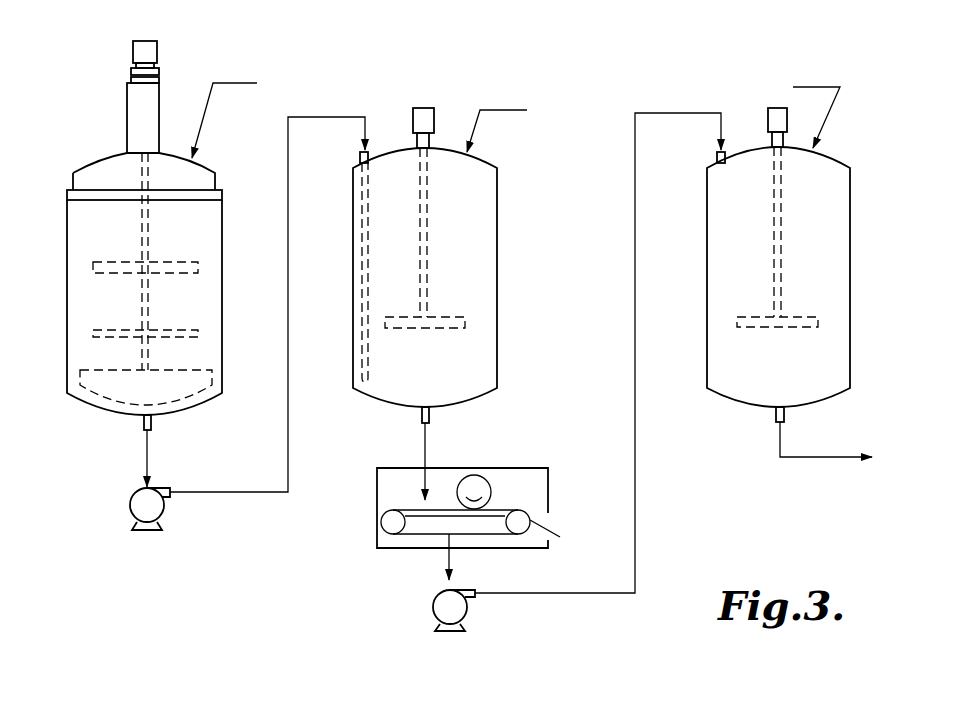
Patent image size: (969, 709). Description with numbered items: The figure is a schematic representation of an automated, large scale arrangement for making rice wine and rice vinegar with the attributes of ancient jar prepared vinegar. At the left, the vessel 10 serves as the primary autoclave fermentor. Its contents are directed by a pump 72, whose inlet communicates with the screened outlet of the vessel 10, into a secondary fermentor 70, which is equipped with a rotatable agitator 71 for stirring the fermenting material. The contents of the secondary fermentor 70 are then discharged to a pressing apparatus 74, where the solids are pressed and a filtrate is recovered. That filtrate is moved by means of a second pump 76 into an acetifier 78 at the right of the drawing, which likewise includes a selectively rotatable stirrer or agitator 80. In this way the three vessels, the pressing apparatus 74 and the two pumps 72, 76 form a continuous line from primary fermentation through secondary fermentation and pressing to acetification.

The vessel 10 is at (98, 142).
The secondary fermentor 70 is at (508, 207).
The rotatable agitator 71 is at (458, 316).
The pump 72 is at (130, 500).
The pressing apparatus 74 is at (370, 510).
The pump 76 is at (433, 602).
The acetifier 78 is at (855, 207).
The selectively rotatable stirrer or agitator 80 is at (807, 318).